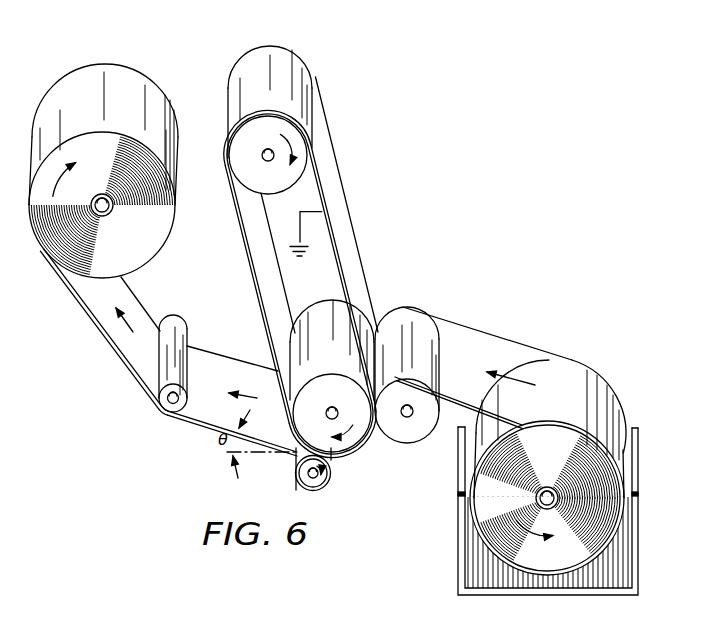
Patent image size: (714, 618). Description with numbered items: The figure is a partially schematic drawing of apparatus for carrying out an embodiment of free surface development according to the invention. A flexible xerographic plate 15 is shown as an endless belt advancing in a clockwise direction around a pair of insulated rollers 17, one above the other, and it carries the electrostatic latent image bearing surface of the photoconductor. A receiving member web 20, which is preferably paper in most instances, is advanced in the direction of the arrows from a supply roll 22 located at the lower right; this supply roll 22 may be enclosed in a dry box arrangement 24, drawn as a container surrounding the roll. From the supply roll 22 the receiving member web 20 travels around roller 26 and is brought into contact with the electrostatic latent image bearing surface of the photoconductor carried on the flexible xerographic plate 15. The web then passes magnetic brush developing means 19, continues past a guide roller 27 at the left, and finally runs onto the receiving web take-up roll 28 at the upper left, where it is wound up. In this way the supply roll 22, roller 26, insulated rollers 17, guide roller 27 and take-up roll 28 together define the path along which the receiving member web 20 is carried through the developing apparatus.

The flexible xerographic plate 15 is at (354, 263).
The insulated rollers 17 is at (263, 187).
The magnetic brush developing means 19 is at (303, 75).
The receiving member web 20 is at (592, 375).
The supply roll 22 is at (525, 557).
The dry box arrangement 24 is at (639, 520).
The roller 26 is at (402, 438).
The guide roller 27 is at (160, 404).
The receiving web take-up roll 28 is at (90, 70).